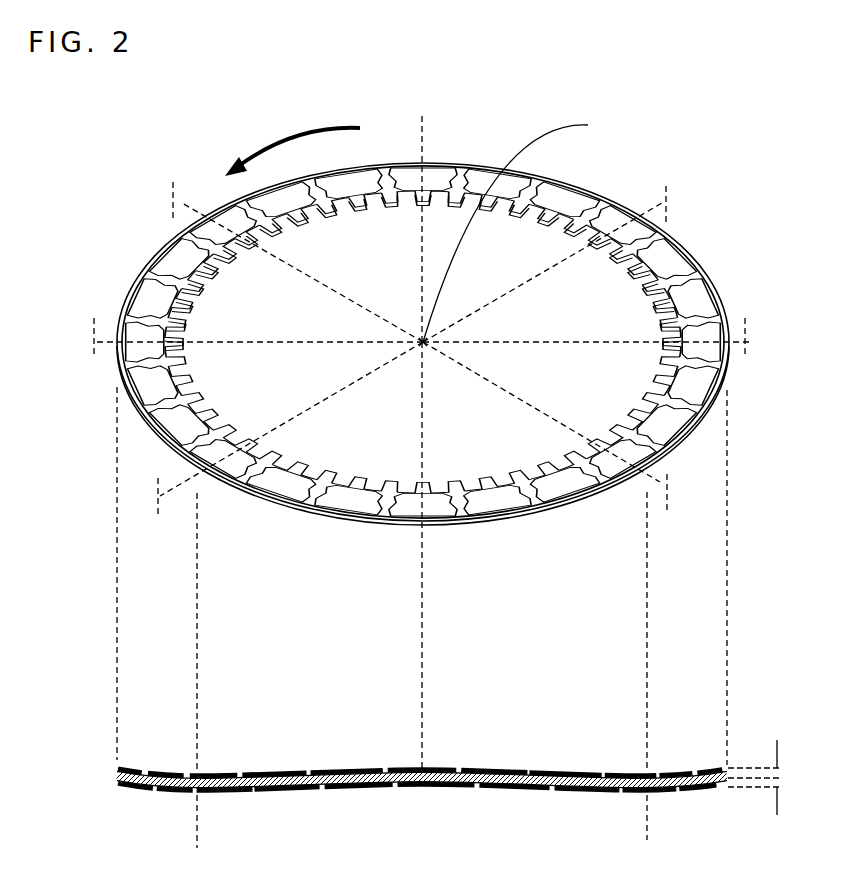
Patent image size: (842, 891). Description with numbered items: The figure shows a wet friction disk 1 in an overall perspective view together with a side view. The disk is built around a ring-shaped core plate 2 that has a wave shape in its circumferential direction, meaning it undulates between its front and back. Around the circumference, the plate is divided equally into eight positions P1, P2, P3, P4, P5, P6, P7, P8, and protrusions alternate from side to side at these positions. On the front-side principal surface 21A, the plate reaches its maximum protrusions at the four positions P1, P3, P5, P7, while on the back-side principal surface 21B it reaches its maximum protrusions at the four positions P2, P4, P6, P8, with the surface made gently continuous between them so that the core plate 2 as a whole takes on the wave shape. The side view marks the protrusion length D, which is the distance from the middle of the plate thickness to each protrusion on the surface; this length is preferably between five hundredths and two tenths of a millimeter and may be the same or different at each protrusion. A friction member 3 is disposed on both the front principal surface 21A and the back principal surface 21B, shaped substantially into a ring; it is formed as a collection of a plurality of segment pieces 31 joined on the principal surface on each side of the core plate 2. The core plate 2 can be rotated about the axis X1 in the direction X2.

The wet friction disk 1 is at (625, 140).
The core plate 2 is at (689, 267).
The friction member 3 is at (337, 719).
The segment pieces 31 is at (668, 261).
The principal surface 21A is at (537, 770).
The principal surface 21B is at (554, 789).
The position P1 is at (426, 128).
The position P2 is at (670, 208).
The position P3 is at (724, 768).
The position P4 is at (671, 496).
The position P5 is at (428, 770).
The position P6 is at (162, 502).
The position P7 is at (120, 766).
The position P8 is at (177, 202).
The rotation axis X1 is at (505, 220).
The rotation direction X2 is at (292, 138).
The protrusion length D is at (773, 754).